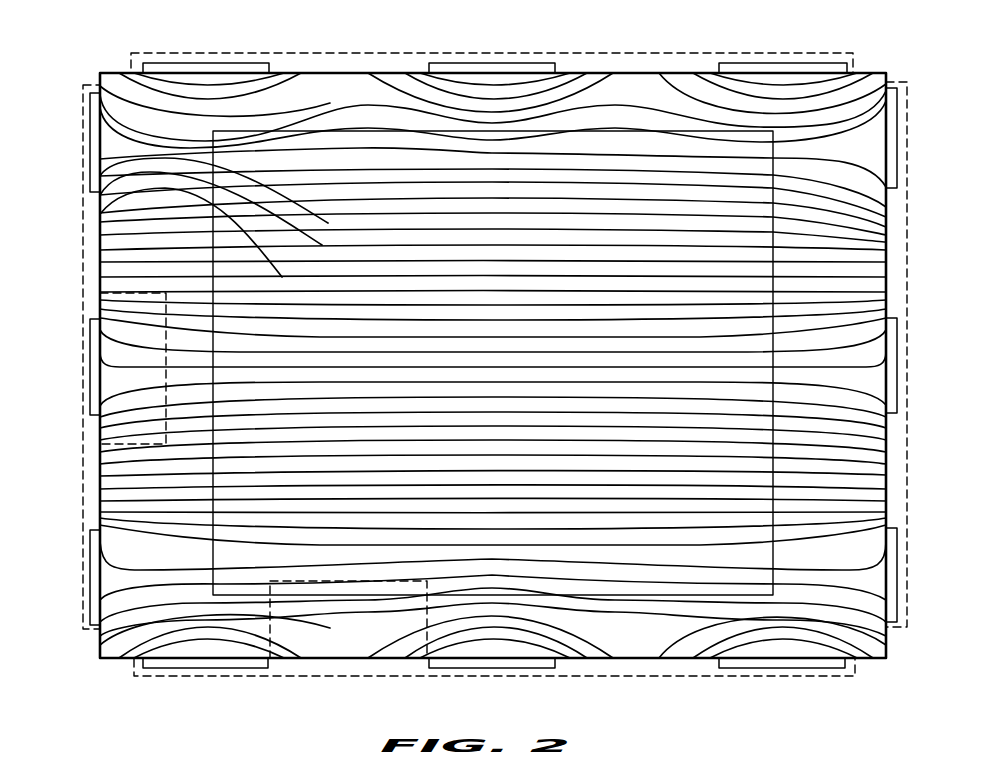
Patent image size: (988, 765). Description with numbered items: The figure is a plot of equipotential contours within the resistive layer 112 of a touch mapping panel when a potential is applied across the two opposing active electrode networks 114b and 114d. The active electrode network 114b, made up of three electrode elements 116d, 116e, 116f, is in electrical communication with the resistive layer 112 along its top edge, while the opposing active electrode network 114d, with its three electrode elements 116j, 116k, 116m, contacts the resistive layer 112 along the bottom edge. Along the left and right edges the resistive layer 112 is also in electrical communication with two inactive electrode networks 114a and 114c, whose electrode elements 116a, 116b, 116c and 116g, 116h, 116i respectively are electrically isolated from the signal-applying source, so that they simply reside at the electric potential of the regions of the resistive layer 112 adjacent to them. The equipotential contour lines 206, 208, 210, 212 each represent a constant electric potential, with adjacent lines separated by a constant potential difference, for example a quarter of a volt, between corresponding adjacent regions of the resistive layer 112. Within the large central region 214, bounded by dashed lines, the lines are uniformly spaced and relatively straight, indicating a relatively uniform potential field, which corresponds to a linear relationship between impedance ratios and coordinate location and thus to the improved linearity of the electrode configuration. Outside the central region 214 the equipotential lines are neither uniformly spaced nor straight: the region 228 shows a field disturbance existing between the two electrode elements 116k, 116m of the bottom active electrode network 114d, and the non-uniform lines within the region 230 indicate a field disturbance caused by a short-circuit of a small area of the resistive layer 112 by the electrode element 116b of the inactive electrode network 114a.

The resistive layer 112 is at (100, 72).
The inactive electrode network 114a is at (90, 487).
The active electrode network 114b is at (288, 53).
The inactive electrode network 114c is at (902, 289).
The active electrode network 114d is at (793, 676).
The electrode element 116a is at (90, 122).
The electrode element 116b is at (90, 348).
The electrode element 116c is at (90, 555).
The electrode element 116d is at (193, 64).
The electrode element 116e is at (480, 66).
The electrode element 116f is at (758, 64).
The electrode element 116g is at (890, 163).
The electrode element 116h is at (890, 375).
The electrode element 116i is at (890, 561).
The electrode element 116j is at (768, 663).
The electrode element 116k is at (493, 664).
The electrode element 116m is at (212, 665).
The equipotential contour line 206 is at (100, 158).
The equipotential contour line 208 is at (100, 176).
The equipotential contour line 210 is at (100, 194).
The equipotential contour line 212 is at (100, 215).
The central region 214 is at (773, 452).
The region 228 is at (290, 650).
The region 230 is at (154, 293).